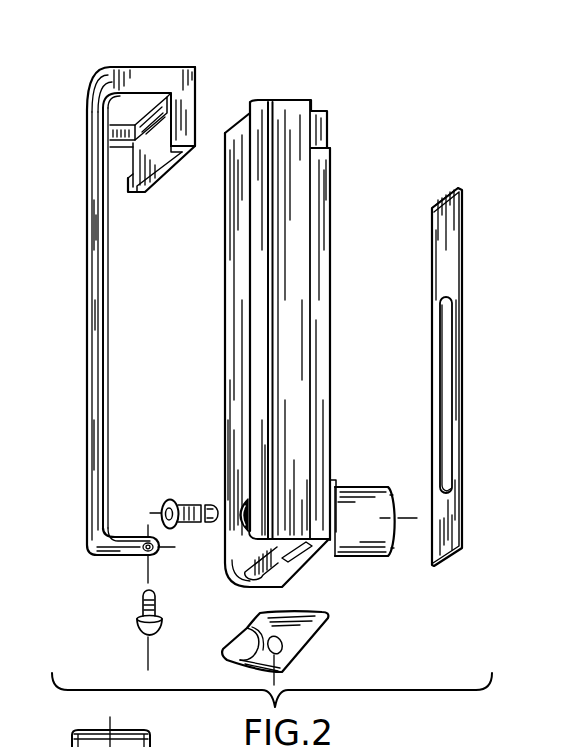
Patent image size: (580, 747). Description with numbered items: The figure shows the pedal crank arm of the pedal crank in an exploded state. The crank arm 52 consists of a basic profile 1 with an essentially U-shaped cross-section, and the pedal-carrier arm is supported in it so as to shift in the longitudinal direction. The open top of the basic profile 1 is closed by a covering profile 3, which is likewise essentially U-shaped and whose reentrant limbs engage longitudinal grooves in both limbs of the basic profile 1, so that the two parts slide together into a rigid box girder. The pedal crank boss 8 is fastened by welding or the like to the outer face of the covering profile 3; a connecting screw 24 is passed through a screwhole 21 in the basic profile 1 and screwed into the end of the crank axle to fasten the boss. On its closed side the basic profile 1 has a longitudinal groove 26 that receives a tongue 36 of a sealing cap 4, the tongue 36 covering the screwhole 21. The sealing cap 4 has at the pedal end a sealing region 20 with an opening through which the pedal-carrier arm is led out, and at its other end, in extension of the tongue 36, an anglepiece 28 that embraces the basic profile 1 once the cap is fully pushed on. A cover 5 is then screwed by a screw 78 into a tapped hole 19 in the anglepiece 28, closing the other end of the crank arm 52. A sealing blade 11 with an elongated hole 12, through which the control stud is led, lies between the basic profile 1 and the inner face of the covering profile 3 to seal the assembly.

The basic profile 1 is at (293, 244).
The covering profile 3 is at (318, 300).
The sealing cap 4 is at (91, 84).
The cover 5 is at (294, 648).
The pedal crank boss 8 is at (375, 538).
The sealing blade 11 is at (445, 248).
The elongated hole 12 is at (447, 400).
The tapped hole 19 is at (156, 550).
The sealing region 20 is at (167, 80).
The screwhole 21 is at (234, 500).
The connecting screw 24 is at (191, 498).
The longitudinal groove 26 is at (225, 312).
The anglepiece 28 is at (93, 559).
The tongue 36 is at (88, 325).
The crank arm 52 is at (333, 178).
The screw 78 is at (141, 605).